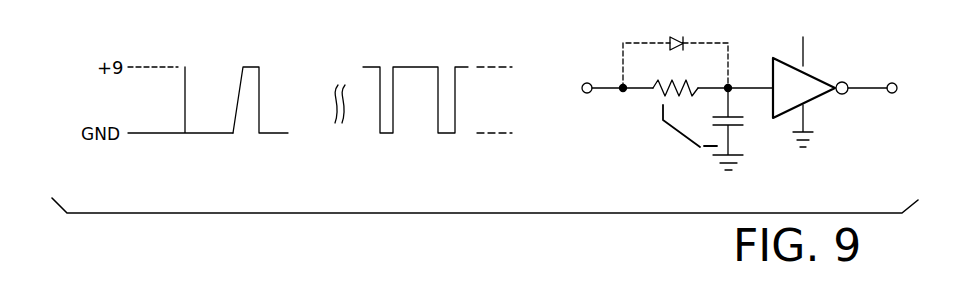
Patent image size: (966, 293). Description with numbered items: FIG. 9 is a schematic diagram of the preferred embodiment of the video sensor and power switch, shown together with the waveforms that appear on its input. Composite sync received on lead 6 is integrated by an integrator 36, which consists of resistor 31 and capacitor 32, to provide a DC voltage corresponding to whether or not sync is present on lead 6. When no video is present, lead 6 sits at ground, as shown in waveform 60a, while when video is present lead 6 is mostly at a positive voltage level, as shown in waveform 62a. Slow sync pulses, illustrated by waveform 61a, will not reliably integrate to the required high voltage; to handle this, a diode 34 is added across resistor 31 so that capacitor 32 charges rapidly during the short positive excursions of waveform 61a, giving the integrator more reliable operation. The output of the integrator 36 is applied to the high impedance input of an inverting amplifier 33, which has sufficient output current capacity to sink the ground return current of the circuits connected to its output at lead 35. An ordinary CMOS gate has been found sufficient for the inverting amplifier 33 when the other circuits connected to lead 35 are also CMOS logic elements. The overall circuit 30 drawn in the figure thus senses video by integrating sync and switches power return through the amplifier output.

The lead 6 is at (587, 83).
The switch debounce circuit 30 is at (698, 158).
The resistor 31 is at (662, 92).
The capacitor 32 is at (734, 127).
The inverting amplifier 33 is at (811, 100).
The diode 34 is at (685, 45).
The lead 35 is at (896, 83).
The integrator 36 is at (685, 140).
The waveform 60a is at (155, 66).
The waveform 61a is at (259, 66).
The waveform 62a is at (368, 66).